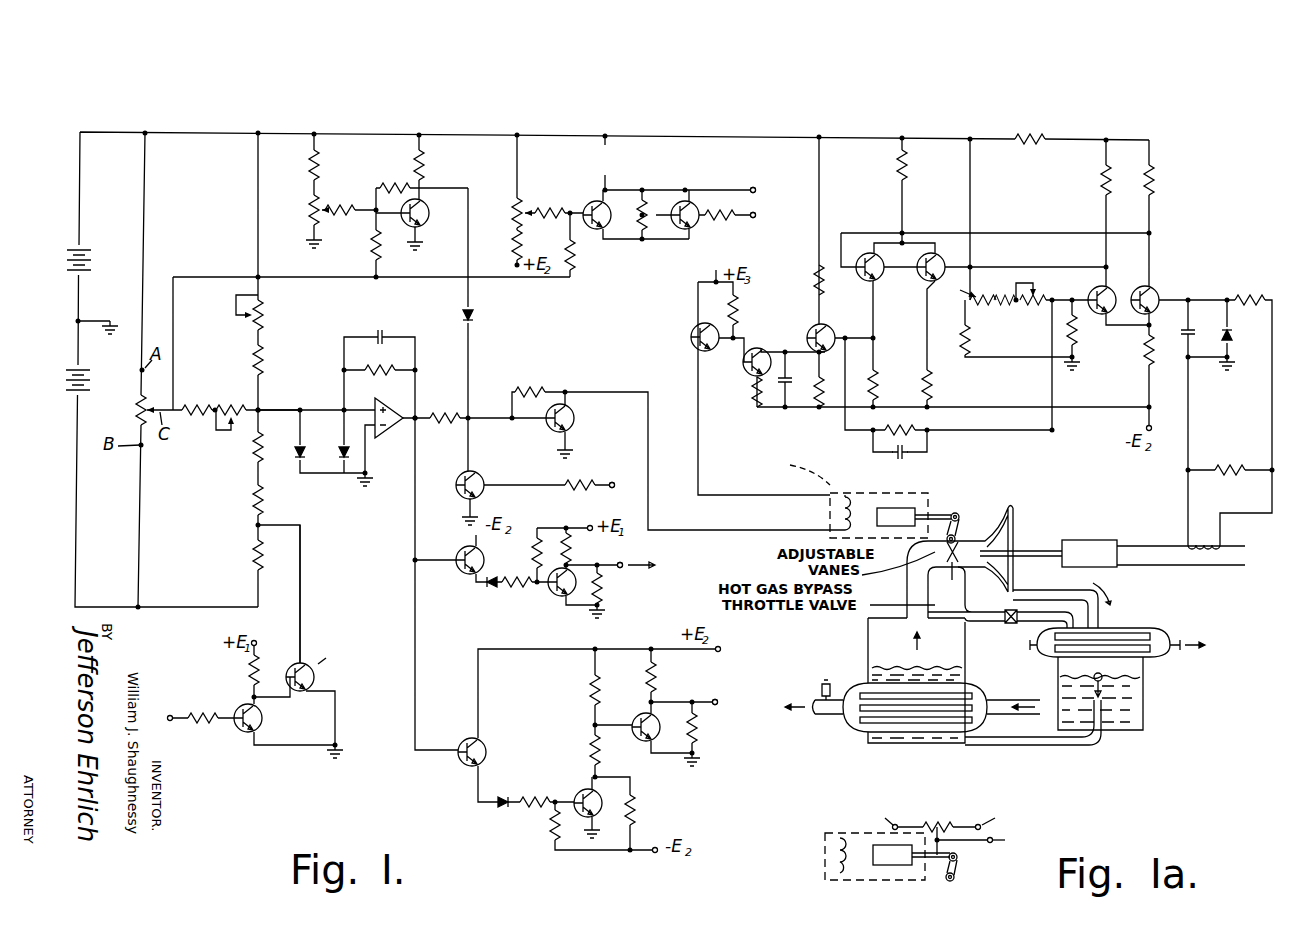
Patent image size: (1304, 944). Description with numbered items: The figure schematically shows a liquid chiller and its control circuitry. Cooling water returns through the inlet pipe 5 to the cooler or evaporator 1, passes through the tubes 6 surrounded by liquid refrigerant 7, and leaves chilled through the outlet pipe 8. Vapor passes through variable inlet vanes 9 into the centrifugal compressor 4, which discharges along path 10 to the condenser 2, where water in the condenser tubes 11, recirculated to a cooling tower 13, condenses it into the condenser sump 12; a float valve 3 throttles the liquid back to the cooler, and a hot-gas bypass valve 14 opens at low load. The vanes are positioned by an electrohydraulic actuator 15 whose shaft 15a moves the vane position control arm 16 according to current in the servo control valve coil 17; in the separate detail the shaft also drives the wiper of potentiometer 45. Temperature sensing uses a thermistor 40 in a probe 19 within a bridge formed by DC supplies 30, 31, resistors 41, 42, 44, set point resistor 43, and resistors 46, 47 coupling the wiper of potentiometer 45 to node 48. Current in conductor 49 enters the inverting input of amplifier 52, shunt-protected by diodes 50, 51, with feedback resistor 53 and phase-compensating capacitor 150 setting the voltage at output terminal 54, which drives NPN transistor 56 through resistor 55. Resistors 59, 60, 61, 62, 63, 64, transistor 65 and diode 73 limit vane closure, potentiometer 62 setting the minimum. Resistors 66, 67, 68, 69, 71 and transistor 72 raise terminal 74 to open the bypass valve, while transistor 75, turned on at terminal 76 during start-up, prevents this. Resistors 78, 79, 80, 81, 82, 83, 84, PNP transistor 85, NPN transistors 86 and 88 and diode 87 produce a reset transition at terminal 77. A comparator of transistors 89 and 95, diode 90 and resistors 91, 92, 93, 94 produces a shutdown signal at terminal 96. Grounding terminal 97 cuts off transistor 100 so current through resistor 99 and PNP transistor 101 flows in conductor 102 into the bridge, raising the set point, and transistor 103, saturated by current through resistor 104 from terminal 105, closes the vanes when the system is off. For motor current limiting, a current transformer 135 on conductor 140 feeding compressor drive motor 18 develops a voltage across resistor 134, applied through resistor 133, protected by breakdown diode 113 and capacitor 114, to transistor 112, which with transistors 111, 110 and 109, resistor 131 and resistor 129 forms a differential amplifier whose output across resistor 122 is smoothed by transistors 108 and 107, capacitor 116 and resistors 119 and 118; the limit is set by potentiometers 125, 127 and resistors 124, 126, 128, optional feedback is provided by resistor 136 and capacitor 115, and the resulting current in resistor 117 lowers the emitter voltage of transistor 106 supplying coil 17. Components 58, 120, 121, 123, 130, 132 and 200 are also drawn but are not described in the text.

In FIG. 1, the cooler or evaporator 1 is at (866, 635).
In FIG. 1, the condenser 2 is at (1143, 668).
In FIG. 1, the float valve 3 is at (1102, 675).
In FIG. 1, the single-stage centrifugal compressor 4 is at (1016, 518).
In FIG. 1, the inlet pipe 5 is at (1005, 722).
In FIG. 1, the tubes 6 is at (975, 716).
In FIG. 1, the liquid refrigerant 7 is at (915, 733).
In FIG. 1, the outlet pipe 8 is at (830, 718).
In FIG. 1, the variable inlet vanes 9 is at (953, 572).
In FIG. 1, the path 10 is at (1075, 600).
In FIG. 1, the condenser tubes 11 is at (1055, 612).
In FIG. 1, the condenser sump 12 is at (1110, 740).
In FIG. 1, the cooling tower 13 is at (1128, 662).
In FIG. 1, the hot-gas bypass valve 14 is at (1003, 607).
In FIG. 1, the electrohydraulic actuator 15 is at (875, 493).
In FIG. 1A, the electrohydraulic actuator 15 is at (862, 833).
In FIG. 1, the actuator shaft 15a is at (950, 510).
In FIG. 1A, the actuator shaft 15a is at (933, 865).
In FIG. 1, the vane position control arm 16 is at (960, 515).
In FIG. 1A, the vane position control arm 16 is at (958, 866).
In FIG. 1, the servo control valve coil 17 is at (842, 518).
In FIG. 1A, the servo control valve coil 17 is at (835, 858).
In FIG. 1, the compressor drive motor 18 is at (1060, 546).
In FIG. 1, the probe 19 is at (820, 690).
In FIG. 1, the DC power supply 30 is at (92, 258).
In FIG. 1, the DC power supply 31 is at (92, 378).
In FIG. 1, the thermistor 40 is at (254, 446).
In FIG. 1, the resistor 41 is at (254, 500).
In FIG. 1, the resistor 42 is at (254, 555).
In FIG. 1, the variable resistor 43 is at (262, 316).
In FIG. 1, the resistor 44 is at (262, 360).
In FIG. 1, the potentiometer 45 is at (137, 412).
In FIG. 1A, the potentiometer 45 is at (938, 820).
In FIG. 1, the resistor 46 is at (195, 398).
In FIG. 1, the potentiometer 47 is at (232, 398).
In FIG. 1, the node 48 is at (260, 414).
In FIG. 1, the conductor 49 is at (280, 400).
In FIG. 1, the diode 50 is at (296, 455).
In FIG. 1, the diode 51 is at (340, 448).
In FIG. 1, the operational amplifier 52 is at (398, 385).
In FIG. 1, the resistor 53 is at (375, 362).
In FIG. 1, the output terminal 54 is at (418, 412).
In FIG. 1, the resistor 55 is at (445, 424).
In FIG. 1, the NPN transistor 56 is at (575, 420).
In FIG. 1, the resistor 58 is at (533, 384).
In FIG. 1, the resistor 59 is at (371, 245).
In FIG. 1, the resistor 60 is at (345, 195).
In FIG. 1, the resistor 61 is at (309, 165).
In FIG. 1, the potentiometer 62 is at (309, 210).
In FIG. 1, the resistor 63 is at (424, 165).
In FIG. 1, the resistor 64 is at (395, 180).
In FIG. 1, the NPN transistor 65 is at (425, 220).
In FIG. 1, the resistor 66 is at (575, 252).
In FIG. 1, the resistor 67 is at (548, 205).
In FIG. 1, the resistor 68 is at (512, 213).
In FIG. 1, the resistor 69 is at (512, 245).
In FIG. 1, the resistor 71 is at (637, 212).
In FIG. 1, the NPN transistor 72 is at (586, 202).
In FIG. 1, the diode 73 is at (481, 316).
In FIG. 1, the terminal 74 is at (753, 186).
In FIG. 1, the transistor 75 is at (693, 230).
In FIG. 1, the terminal 76 is at (755, 219).
In FIG. 1, the terminal 77 is at (718, 706).
In FIG. 1, the resistor 78 is at (530, 808).
In FIG. 1, the resistor 79 is at (550, 830).
In FIG. 1, the resistor 80 is at (590, 690).
In FIG. 1, the resistor 81 is at (590, 750).
In FIG. 1, the resistor 82 is at (635, 812).
In FIG. 1, the resistor 83 is at (670, 677).
In FIG. 1, the resistor 84 is at (697, 730).
In FIG. 1, the PNP transistor 85 is at (578, 792).
In FIG. 1, the NPN transistor 86 is at (636, 716).
In FIG. 1, the diode 87 is at (503, 795).
In FIG. 1, the NPN transistor 88 is at (486, 742).
In FIG. 1, the PNP transistor 89 is at (456, 548).
In FIG. 1, the diode 90 is at (490, 588).
In FIG. 1, the resistor 91 is at (515, 588).
In FIG. 1, the resistor 92 is at (532, 550).
In FIG. 1, the resistor 93 is at (571, 548).
In FIG. 1, the resistor 94 is at (602, 590).
In FIG. 1, the NPN transistor 95 is at (550, 592).
In FIG. 1, the terminal 96 is at (623, 560).
In FIG. 1, the terminal 97 is at (203, 710).
In FIG. 1, the resistor 99 is at (249, 670).
In FIG. 1, the NPN transistor 100 is at (240, 730).
In FIG. 1, the PNP transistor 101 is at (305, 662).
In FIG. 1, the conductor 102 is at (302, 595).
In FIG. 1, the transistor 103 is at (458, 490).
In FIG. 1, the resistor 104 is at (512, 476).
In FIG. 1, the terminal 105 is at (616, 482).
In FIG. 1, the transistor 106 is at (684, 335).
In FIG. 1, the transistor 107 is at (765, 350).
In FIG. 1, the transistor 108 is at (834, 324).
In FIG. 1, the PNP transistor 109 is at (882, 272).
In FIG. 1, the transistor 110 is at (920, 278).
In FIG. 1, the transistor 111 is at (1112, 290).
In FIG. 1, the transistor 112 is at (1160, 290).
In FIG. 1, the breakdown diode 113 is at (1232, 335).
In FIG. 1, the by-pass capacitor 114 is at (1192, 330).
In FIG. 1, the capacitor 115 is at (903, 456).
In FIG. 1, the capacitor 116 is at (783, 390).
In FIG. 1, the resistor 117 is at (738, 310).
In FIG. 1, the resistor 118 is at (752, 395).
In FIG. 1, the resistor 119 is at (815, 398).
In FIG. 1, the resistor 120 is at (814, 272).
In FIG. 1, the resistor 121 is at (897, 167).
In FIG. 1, the resistor 122 is at (878, 385).
In FIG. 1, the resistor 123 is at (932, 385).
In FIG. 1, the fixed resistor 124 is at (970, 340).
In FIG. 1, the potentiometer 125 is at (962, 292).
In FIG. 1, the fixed resistor 126 is at (1003, 306).
In FIG. 1, the potentiometer 127 is at (1030, 306).
In FIG. 1, the fixed resistor 128 is at (1077, 330).
In FIG. 1, the resistor 129 is at (1030, 132).
In FIG. 1, the resistor 130 is at (1101, 183).
In FIG. 1, the resistor 131 is at (1154, 183).
In FIG. 1, the resistor 132 is at (1144, 348).
In FIG. 1, the resistor 133 is at (1250, 292).
In FIG. 1, the resistor 134 is at (1228, 462).
In FIG. 1, the current transformer 135 is at (1200, 540).
In FIG. 1, the resistor 136 is at (905, 424).
In FIG. 1, the conductor 140 is at (1245, 556).
In FIG. 1, the capacitor 150 is at (380, 328).
In FIG. 1, the resistor 200 is at (725, 208).